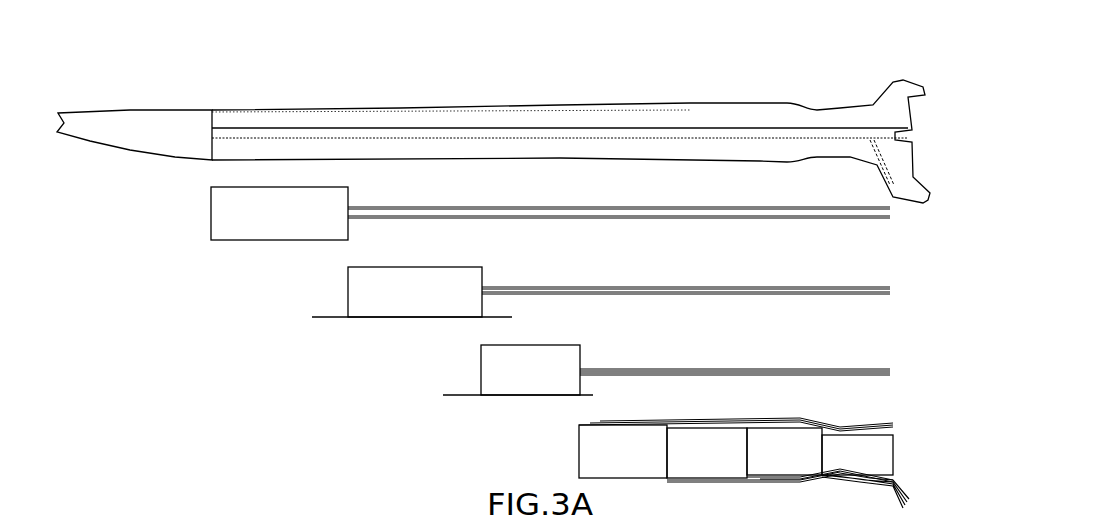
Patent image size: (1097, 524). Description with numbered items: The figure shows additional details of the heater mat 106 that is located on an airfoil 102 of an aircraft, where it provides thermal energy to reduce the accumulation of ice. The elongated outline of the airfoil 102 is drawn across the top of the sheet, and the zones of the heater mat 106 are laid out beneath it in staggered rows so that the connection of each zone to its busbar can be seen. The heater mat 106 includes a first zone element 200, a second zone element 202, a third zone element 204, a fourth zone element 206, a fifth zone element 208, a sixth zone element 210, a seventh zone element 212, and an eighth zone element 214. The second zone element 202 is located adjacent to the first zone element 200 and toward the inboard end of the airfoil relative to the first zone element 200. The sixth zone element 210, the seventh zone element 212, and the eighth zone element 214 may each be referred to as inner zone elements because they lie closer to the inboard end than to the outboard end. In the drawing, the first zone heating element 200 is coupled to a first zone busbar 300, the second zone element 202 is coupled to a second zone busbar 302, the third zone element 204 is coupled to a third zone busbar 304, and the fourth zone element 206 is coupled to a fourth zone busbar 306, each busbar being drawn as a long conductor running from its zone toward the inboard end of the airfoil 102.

The airfoil 102 is at (738, 105).
The heater mat 106 is at (84, 108).
The first zone element 200 is at (162, 119).
The second zone element 202 is at (211, 216).
The third zone element 204 is at (348, 294).
The fourth zone element 206 is at (481, 370).
The fifth zone element 208 is at (579, 452).
The sixth zone element 210 is at (696, 481).
The seventh zone element 212 is at (777, 480).
The eighth zone element 214 is at (837, 477).
The first zone busbar 300 is at (252, 128).
The second zone busbar 302 is at (388, 211).
The third zone busbar 304 is at (507, 290).
The fourth zone busbar 306 is at (655, 370).